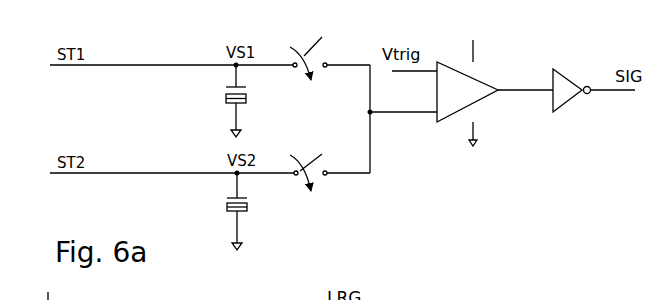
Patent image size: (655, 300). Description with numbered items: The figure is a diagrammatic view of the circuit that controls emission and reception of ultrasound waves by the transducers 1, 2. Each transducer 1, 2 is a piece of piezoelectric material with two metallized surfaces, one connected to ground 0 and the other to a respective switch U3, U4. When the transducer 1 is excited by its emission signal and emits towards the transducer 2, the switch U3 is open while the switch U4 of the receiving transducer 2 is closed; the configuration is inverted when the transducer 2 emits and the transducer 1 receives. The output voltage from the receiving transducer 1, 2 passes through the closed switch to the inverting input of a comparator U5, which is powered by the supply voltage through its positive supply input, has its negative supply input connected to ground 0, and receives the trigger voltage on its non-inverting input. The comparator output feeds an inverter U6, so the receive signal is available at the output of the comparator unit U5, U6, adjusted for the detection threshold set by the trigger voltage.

The transducer 1 is at (226, 95).
The transducer 2 is at (227, 204).
The ground 0 is at (246, 133).
The switch U3 is at (316, 40).
The switch U4 is at (318, 182).
The comparator U5 is at (448, 123).
The inverter U6 is at (567, 106).